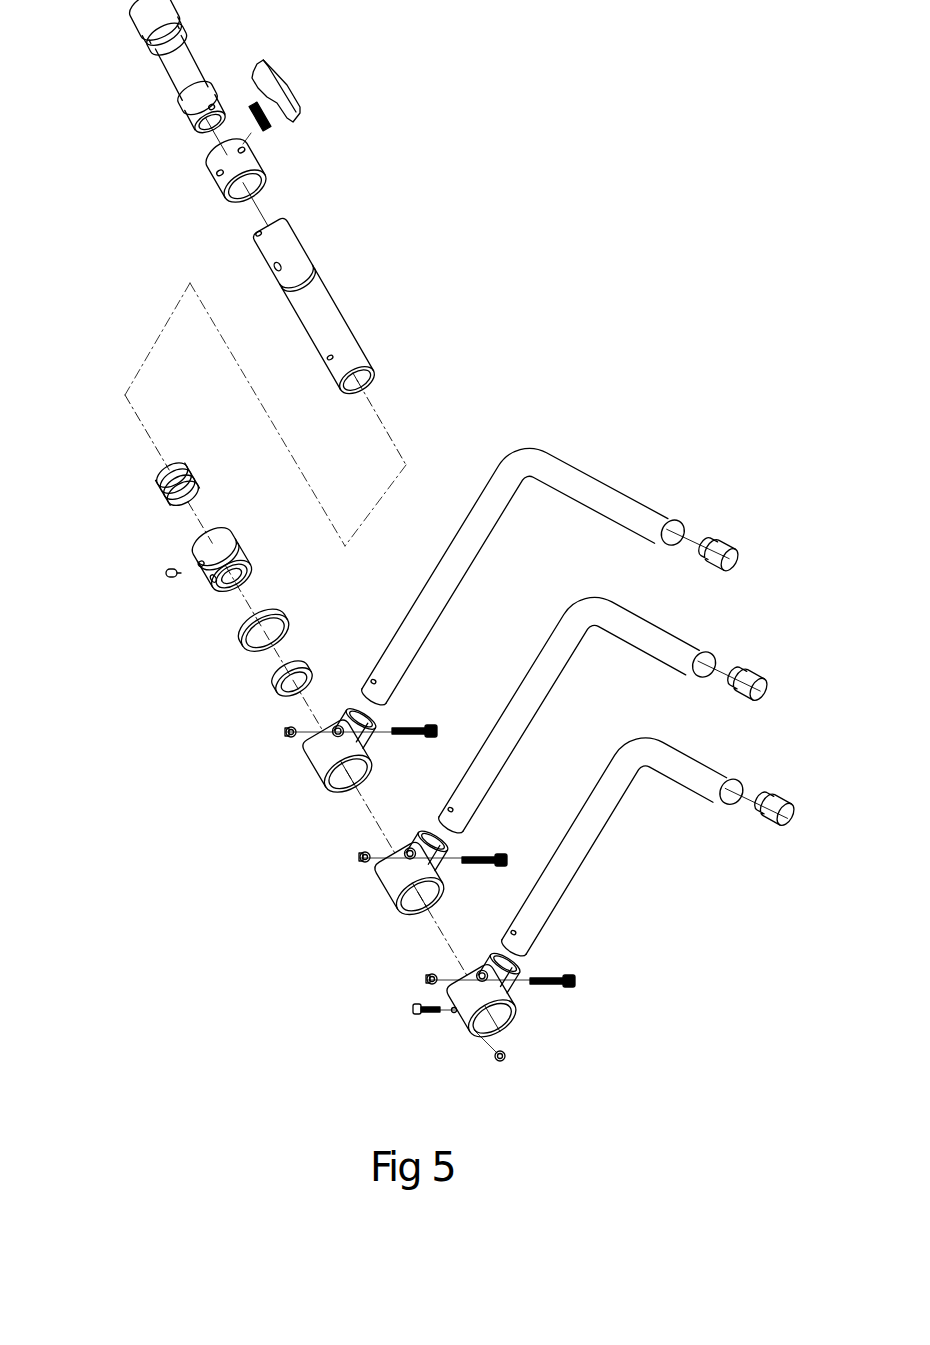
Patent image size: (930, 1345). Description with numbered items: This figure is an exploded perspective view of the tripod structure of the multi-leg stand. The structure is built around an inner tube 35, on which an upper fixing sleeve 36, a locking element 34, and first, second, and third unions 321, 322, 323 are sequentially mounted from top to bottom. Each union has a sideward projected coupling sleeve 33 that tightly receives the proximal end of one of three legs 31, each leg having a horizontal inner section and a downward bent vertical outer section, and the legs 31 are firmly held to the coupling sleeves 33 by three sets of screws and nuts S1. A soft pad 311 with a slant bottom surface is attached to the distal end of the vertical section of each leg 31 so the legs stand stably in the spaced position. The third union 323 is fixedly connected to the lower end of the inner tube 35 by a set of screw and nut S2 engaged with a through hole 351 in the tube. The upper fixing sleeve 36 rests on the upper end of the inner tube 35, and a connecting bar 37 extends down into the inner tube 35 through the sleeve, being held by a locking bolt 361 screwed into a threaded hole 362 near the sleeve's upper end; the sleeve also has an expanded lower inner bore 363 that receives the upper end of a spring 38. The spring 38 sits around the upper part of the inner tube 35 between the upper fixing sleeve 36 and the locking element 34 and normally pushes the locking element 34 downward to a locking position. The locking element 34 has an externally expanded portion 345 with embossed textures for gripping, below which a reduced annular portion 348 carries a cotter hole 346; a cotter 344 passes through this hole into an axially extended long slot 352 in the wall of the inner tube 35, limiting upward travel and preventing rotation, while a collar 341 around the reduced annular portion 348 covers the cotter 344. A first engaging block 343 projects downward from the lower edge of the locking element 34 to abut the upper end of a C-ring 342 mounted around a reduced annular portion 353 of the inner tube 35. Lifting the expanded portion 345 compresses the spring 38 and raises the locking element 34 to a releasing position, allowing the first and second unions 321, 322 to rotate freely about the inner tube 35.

The leg 31 is at (475, 530).
The soft pad 311 is at (723, 550).
The first union 321 is at (312, 768).
The second union 322 is at (377, 903).
The third union 323 is at (440, 1033).
The coupling sleeve 33 is at (343, 742).
The locking element 34 is at (200, 543).
The collar 341 is at (262, 620).
The C-ring 342 is at (262, 688).
The first engaging block 343 is at (208, 580).
The cotter 344 is at (165, 573).
The expanded portion 345 is at (248, 543).
The cotter hole 346 is at (197, 573).
The reduced annular portion 348 is at (205, 583).
The inner tube 35 is at (315, 317).
The through hole 351 is at (333, 363).
The long slot 352 is at (267, 267).
The reduced annular portion 353 is at (307, 263).
The upper fixing sleeve 36 is at (202, 153).
The locking bolt 361 is at (290, 88).
The threaded hole 362 is at (252, 137).
The expanded lower inner bore 363 is at (270, 183).
The connecting bar 37 is at (137, 22).
The spring 38 is at (190, 463).
The screws and nuts S1 is at (412, 728).
The screw and nut S2 is at (425, 1020).